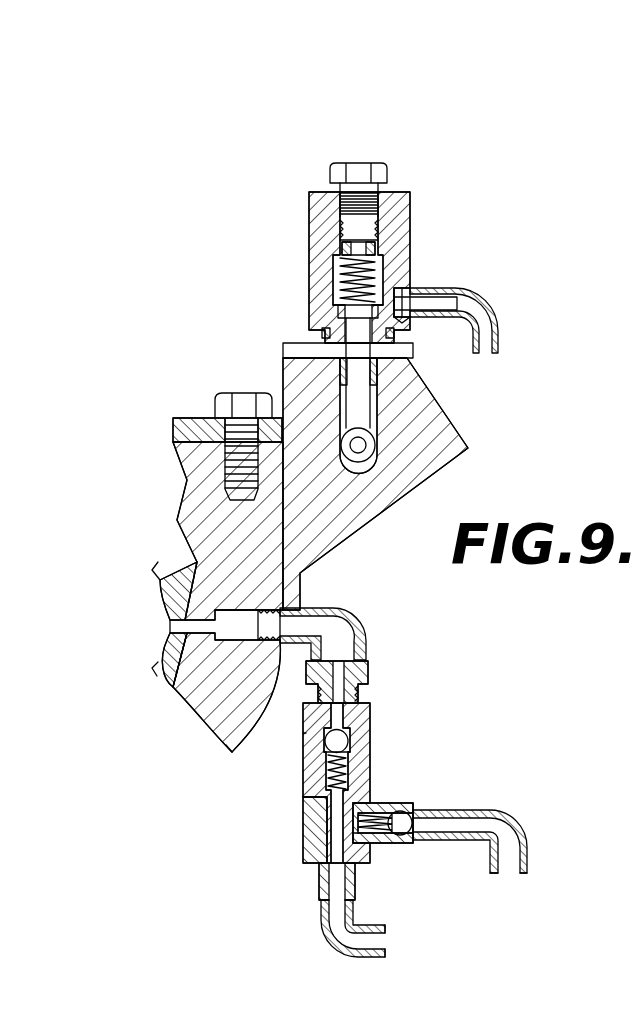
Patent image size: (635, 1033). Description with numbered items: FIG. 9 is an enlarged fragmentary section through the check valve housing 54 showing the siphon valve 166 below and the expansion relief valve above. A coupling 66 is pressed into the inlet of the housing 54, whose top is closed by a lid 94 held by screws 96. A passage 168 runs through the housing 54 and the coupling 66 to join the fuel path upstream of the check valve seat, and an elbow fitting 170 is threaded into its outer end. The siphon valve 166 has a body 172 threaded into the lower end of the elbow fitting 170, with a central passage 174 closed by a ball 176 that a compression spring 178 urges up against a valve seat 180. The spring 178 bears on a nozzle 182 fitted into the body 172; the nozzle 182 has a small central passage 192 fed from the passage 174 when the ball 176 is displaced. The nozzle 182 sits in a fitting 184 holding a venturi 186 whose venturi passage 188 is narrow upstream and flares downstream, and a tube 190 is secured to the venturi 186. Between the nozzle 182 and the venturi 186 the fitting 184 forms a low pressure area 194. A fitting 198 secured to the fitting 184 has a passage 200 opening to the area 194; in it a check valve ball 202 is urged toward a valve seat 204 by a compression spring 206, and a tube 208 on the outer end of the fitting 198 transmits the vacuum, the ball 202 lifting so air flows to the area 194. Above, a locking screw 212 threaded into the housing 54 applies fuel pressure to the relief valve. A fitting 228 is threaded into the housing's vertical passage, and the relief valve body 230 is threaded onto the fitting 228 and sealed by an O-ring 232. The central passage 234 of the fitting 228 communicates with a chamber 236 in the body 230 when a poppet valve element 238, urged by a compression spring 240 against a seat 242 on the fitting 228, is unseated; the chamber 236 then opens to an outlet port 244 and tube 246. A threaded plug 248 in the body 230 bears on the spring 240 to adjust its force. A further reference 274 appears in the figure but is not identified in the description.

The check valve housing 54 is at (322, 537).
The coupling 66 is at (165, 645).
The lid 94 is at (195, 432).
The screws 96 is at (225, 405).
The siphon valve 166 is at (397, 785).
The passage 168 is at (163, 587).
The elbow fitting 170 is at (360, 625).
The valve body 172 is at (303, 710).
The central passage 174 is at (363, 685).
The ball 176 is at (350, 738).
The compression spring 178 is at (352, 748).
The valve seat 180 is at (303, 733).
The nozzle 182 is at (348, 770).
The fitting 184 is at (303, 800).
The venturi 186 is at (318, 872).
The venturi passage 188 is at (320, 900).
The tube 190 is at (386, 945).
The central passage 192 is at (362, 808).
The low pressure area 194 is at (305, 830).
The fitting 198 is at (440, 812).
The passage 200 is at (355, 845).
The check valve ball 202 is at (420, 805).
The valve seat 204 is at (410, 830).
The compression spring 206 is at (380, 825).
The tube 208 is at (530, 840).
The locking screw 212 is at (388, 297).
The fitting 228 is at (310, 350).
The valve body 230 is at (320, 208).
The O-ring 232 is at (326, 334).
The central passage 234 is at (360, 380).
The chamber 236 is at (394, 262).
The poppet valve element 238 is at (338, 296).
The compression spring 240 is at (333, 268).
The seat 242 is at (392, 297).
The outlet port 244 is at (396, 318).
The tube 246 is at (500, 333).
The threaded plug 248 is at (365, 185).
The line 274 is at (611, 855).